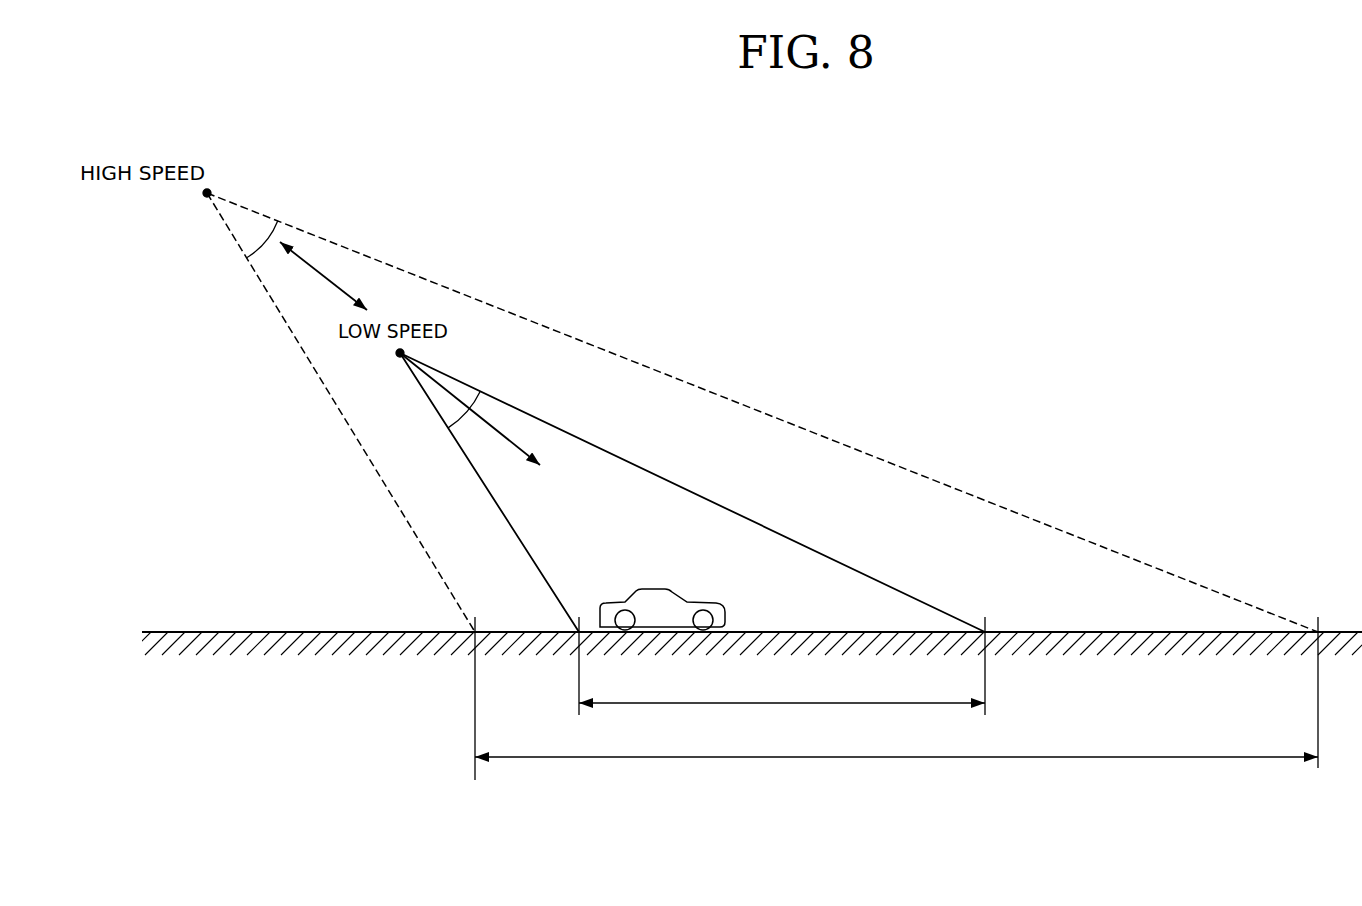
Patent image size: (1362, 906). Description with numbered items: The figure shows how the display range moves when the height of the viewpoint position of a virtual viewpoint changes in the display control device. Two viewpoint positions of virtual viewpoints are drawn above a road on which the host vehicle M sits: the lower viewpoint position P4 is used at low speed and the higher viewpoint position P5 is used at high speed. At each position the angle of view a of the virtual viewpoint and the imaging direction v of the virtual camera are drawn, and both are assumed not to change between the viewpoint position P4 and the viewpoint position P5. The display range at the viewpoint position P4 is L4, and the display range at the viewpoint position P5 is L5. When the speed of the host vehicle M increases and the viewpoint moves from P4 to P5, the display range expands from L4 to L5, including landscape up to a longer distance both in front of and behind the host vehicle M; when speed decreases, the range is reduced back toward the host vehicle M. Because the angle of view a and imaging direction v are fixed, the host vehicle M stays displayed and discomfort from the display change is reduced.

The viewpoint position P5 is at (212, 188).
The viewpoint position P4 is at (401, 358).
The angle of view a is at (262, 258).
The imaging direction v is at (417, 368).
The host vehicle M is at (682, 598).
The display range L4 is at (782, 688).
The display range L5 is at (896, 740).